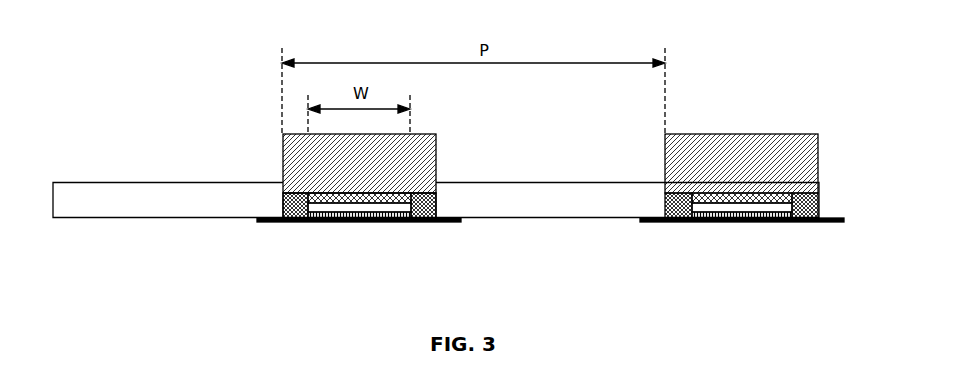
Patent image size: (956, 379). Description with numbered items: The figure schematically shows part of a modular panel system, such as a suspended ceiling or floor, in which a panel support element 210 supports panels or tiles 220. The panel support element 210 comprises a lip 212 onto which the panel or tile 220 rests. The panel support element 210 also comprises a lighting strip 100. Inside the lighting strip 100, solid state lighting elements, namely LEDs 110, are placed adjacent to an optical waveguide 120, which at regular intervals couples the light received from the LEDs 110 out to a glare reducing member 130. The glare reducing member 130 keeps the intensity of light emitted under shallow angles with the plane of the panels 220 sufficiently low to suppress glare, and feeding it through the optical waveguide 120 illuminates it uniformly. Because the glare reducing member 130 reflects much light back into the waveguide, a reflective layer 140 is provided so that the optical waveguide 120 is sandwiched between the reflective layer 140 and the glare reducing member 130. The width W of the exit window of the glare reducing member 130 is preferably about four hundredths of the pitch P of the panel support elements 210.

The lighting strip 100 is at (290, 221).
The solid state lighting elements 110 is at (425, 210).
The optical waveguide 120 is at (358, 207).
The glare reducing member 130 is at (390, 215).
The reflective layer 140 is at (323, 200).
The panel support element 210 is at (437, 150).
The lip 212 is at (648, 222).
The panels or tiles 220 is at (605, 186).